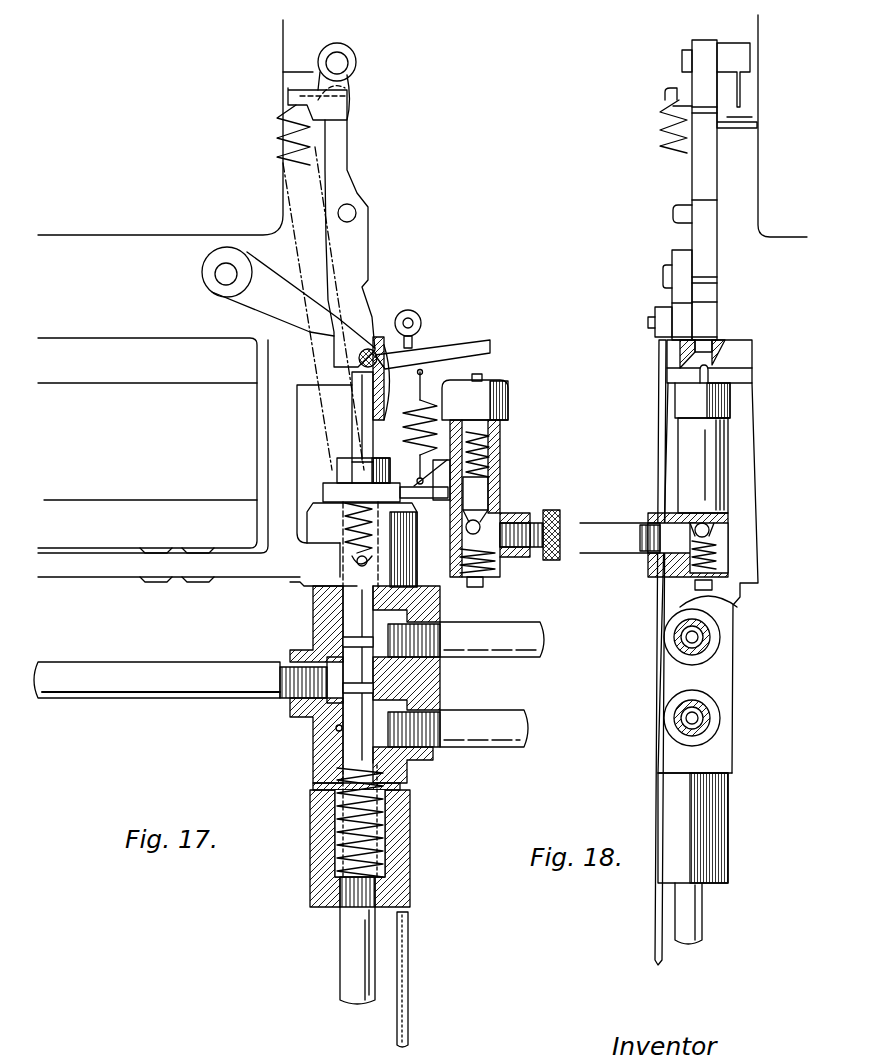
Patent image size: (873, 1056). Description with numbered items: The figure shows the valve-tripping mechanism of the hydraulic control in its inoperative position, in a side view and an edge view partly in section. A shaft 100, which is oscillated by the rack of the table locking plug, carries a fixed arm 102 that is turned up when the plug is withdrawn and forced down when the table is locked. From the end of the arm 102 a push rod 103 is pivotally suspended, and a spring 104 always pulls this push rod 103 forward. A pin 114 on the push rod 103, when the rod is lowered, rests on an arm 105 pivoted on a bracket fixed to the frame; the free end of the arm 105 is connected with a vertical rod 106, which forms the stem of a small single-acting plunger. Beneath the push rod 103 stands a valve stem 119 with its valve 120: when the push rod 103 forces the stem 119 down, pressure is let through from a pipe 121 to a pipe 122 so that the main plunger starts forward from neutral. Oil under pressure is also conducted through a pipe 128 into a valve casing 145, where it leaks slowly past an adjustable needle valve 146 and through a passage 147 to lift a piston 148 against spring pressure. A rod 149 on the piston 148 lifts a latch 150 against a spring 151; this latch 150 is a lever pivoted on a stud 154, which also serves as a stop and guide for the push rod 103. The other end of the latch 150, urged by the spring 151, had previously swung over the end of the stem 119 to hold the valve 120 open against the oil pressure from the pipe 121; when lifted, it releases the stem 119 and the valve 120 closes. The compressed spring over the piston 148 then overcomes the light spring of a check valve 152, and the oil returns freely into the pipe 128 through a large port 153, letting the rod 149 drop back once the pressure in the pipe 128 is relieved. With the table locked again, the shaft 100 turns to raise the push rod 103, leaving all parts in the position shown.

In FIG. 17, the shaft 100 is at (318, 90).
In FIG. 17, the arm 102 is at (353, 52).
In FIG. 18, the arm 102 is at (729, 55).
In FIG. 17, the push rod 103 is at (356, 236).
In FIG. 18, the push rod 103 is at (704, 190).
In FIG. 17, the spring 104 is at (280, 155).
In FIG. 18, the spring 104 is at (661, 135).
In FIG. 17, the arm 105 is at (398, 310).
In FIG. 18, the arm 105 is at (680, 293).
In FIG. 17, the vertical rod 106 is at (422, 327).
In FIG. 18, the vertical rod 106 is at (662, 360).
In FIG. 17, the pin 114 is at (356, 211).
In FIG. 18, the pin 114 is at (682, 207).
In FIG. 17, the valve stem 119 is at (360, 405).
In FIG. 17, the valve 120 is at (354, 713).
In FIG. 17, the pipe 121 is at (508, 742).
In FIG. 17, the pipe 122 is at (212, 667).
In FIG. 18, the pipe 122 is at (710, 718).
In FIG. 18, the pipe 128 is at (610, 532).
In FIG. 17, the valve casing 145 is at (478, 488).
In FIG. 18, the valve casing 145 is at (710, 452).
In FIG. 17, the adjustable needle valve 146 is at (502, 546).
In FIG. 17, the passage 147 is at (490, 521).
In FIG. 17, the piston 148 is at (485, 480).
In FIG. 17, the rod 149 is at (481, 377).
In FIG. 18, the rod 149 is at (710, 370).
In FIG. 17, the latch 150 is at (483, 339).
In FIG. 18, the latch 150 is at (701, 343).
In FIG. 17, the spring 151 is at (421, 412).
In FIG. 17, the check valve 152 is at (447, 556).
In FIG. 18, the check valve 152 is at (705, 547).
In FIG. 18, the large port 153 is at (720, 520).
In FIG. 17, the stud 154 is at (370, 335).